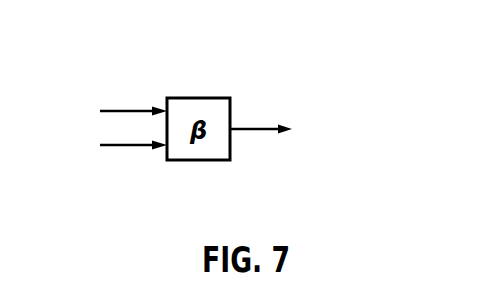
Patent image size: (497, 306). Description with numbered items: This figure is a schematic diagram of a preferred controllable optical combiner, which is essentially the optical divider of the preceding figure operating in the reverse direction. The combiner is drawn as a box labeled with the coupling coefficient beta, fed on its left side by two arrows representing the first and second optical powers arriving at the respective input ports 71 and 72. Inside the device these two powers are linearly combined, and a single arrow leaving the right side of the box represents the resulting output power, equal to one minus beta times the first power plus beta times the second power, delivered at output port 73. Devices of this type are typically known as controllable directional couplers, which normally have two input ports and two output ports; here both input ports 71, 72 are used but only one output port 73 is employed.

The input port 71 is at (133, 110).
The input port 72 is at (138, 146).
The output port 73 is at (251, 128).